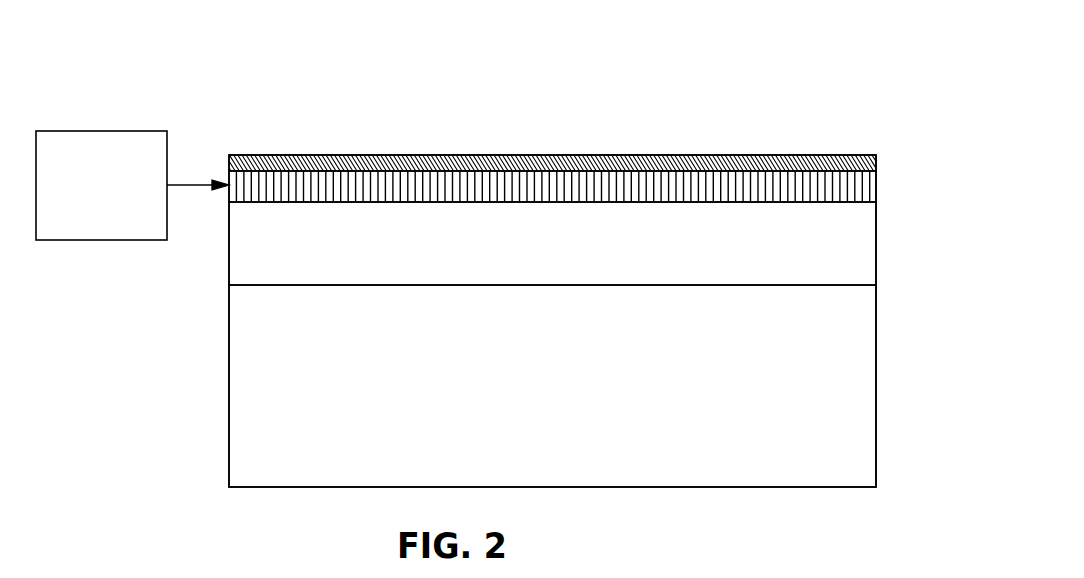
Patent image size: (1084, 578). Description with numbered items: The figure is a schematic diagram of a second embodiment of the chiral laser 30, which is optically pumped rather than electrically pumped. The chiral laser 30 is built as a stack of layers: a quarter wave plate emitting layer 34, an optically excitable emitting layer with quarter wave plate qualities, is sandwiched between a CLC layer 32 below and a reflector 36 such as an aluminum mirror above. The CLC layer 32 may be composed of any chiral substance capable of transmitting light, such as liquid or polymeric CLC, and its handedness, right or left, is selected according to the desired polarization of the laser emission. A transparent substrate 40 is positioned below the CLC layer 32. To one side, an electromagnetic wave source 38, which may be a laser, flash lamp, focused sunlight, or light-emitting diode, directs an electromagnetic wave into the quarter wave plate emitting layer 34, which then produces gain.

The chiral laser 30 is at (575, 102).
The CLC layer 32 is at (229, 273).
The quarter wave plate emitting layer 34 is at (228, 177).
The reflector 36 is at (692, 155).
The electromagnetic wave source 38 is at (158, 242).
The transparent substrate 40 is at (745, 487).